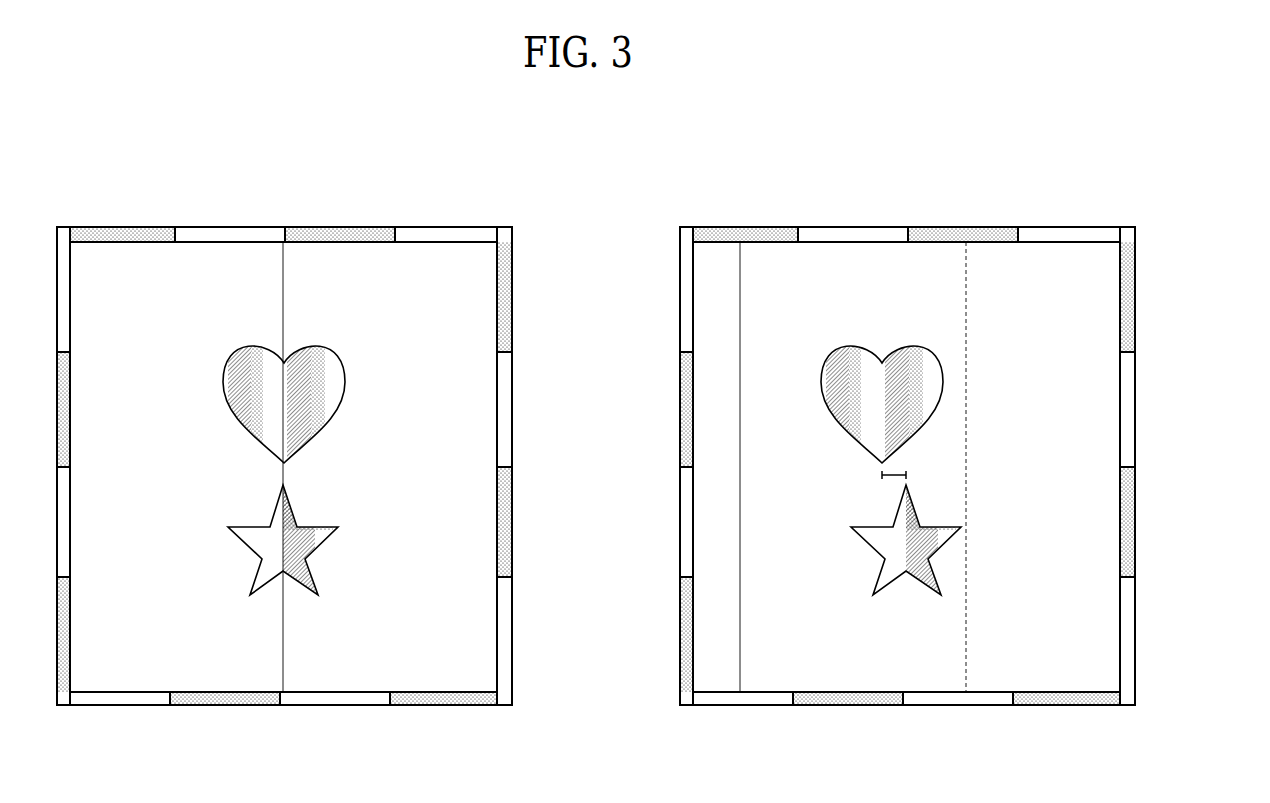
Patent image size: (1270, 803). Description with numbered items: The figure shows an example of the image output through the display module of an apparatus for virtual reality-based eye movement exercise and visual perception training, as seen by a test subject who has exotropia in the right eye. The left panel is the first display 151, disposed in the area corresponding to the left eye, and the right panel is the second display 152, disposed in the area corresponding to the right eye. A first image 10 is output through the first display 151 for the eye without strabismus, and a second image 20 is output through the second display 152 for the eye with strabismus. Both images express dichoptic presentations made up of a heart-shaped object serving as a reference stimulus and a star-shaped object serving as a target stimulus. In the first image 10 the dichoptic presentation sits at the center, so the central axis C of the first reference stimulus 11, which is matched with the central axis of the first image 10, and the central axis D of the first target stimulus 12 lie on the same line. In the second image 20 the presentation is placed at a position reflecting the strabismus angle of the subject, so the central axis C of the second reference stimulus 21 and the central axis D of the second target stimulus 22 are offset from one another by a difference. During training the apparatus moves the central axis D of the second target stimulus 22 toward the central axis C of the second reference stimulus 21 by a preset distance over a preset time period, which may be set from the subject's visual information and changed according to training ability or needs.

The first image 10 is at (309, 407).
The first reference stimulus 11 is at (316, 346).
The first target stimulus 12 is at (300, 520).
The first display 151 is at (370, 228).
The second image 20 is at (932, 407).
The second reference stimulus 21 is at (916, 346).
The second target stimulus 22 is at (925, 520).
The second display 152 is at (992, 228).
The central axis of reference stimulus C is at (283, 296).
The central axis of target stimulus D is at (965, 290).